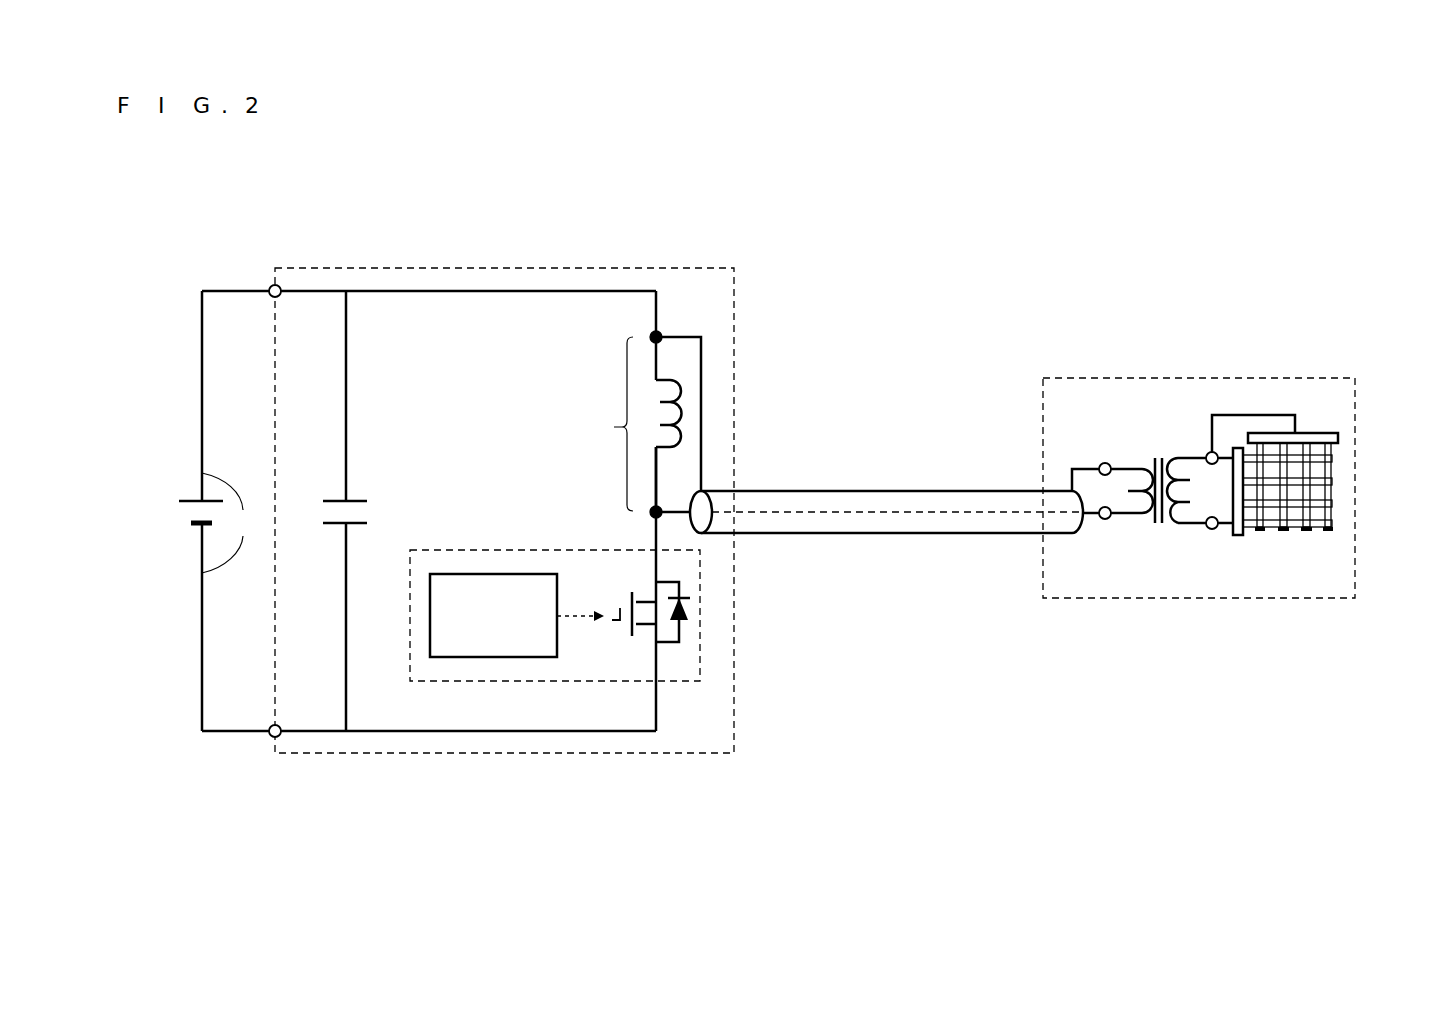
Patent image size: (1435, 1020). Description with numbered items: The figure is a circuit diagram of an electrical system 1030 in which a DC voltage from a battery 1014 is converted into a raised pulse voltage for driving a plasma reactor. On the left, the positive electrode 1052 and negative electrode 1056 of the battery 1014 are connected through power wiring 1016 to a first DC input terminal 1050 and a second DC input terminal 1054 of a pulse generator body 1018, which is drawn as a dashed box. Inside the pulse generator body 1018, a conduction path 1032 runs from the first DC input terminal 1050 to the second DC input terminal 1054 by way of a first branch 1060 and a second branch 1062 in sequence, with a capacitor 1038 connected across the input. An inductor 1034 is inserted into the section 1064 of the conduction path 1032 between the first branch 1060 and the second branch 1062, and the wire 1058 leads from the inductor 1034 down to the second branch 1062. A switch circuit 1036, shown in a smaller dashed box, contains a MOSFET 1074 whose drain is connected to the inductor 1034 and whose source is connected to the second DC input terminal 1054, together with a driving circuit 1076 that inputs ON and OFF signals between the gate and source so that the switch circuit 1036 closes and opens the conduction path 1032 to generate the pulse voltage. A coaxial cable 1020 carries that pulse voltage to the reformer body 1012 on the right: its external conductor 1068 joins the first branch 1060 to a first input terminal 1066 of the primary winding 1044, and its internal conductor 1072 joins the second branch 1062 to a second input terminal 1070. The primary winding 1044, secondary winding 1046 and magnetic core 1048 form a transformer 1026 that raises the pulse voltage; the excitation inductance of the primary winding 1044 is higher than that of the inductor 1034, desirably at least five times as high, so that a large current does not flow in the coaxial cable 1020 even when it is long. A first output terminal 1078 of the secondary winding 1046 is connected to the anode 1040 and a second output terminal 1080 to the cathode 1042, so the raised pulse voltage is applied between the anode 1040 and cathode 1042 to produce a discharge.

The reformer body 1012 is at (1110, 376).
The battery 1014 is at (164, 513).
The power wiring 1016 is at (238, 523).
The pulse generator body 1018 is at (497, 266).
The coaxial cable 1020 is at (886, 583).
The transformer 1026 is at (1170, 571).
The electrical system 1030 is at (915, 396).
The conduction path 1032 is at (311, 294).
The inductor 1034 is at (681, 390).
The switch circuit 1036 is at (430, 548).
The capacitor 1038 is at (366, 512).
The anode 1040 is at (1329, 510).
The cathode 1042 is at (1315, 532).
The primary winding 1044 is at (1148, 518).
The secondary winding 1046 is at (1212, 552).
The magnetic core 1048 is at (1158, 525).
The first DC input terminal 1050 is at (271, 284).
The positive electrode 1052 is at (188, 497).
The second DC input terminal 1054 is at (272, 739).
The negative electrode 1056 is at (196, 527).
The connection wire 1058 is at (659, 457).
The first branch 1060 is at (650, 337).
The second branch 1062 is at (650, 512).
The section 1064 is at (684, 424).
The first input terminal 1066 is at (1105, 462).
The external conductor 1068 is at (907, 535).
The second input terminal 1070 is at (1105, 520).
The internal conductor 1072 is at (977, 516).
The MOSFET 1074 is at (668, 646).
The driving circuit 1076 is at (495, 573).
The first output terminal 1078 is at (1206, 452).
The second output terminal 1080 is at (1212, 530).